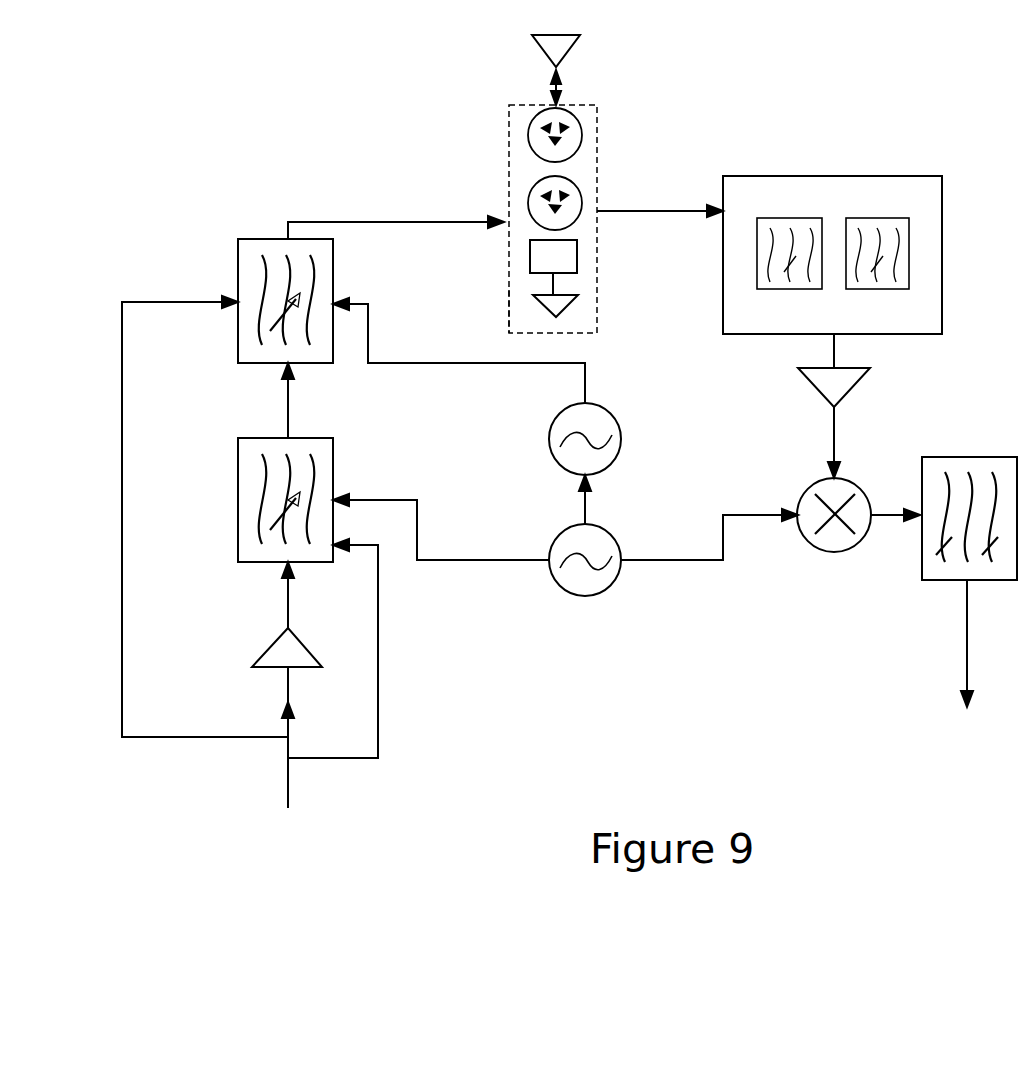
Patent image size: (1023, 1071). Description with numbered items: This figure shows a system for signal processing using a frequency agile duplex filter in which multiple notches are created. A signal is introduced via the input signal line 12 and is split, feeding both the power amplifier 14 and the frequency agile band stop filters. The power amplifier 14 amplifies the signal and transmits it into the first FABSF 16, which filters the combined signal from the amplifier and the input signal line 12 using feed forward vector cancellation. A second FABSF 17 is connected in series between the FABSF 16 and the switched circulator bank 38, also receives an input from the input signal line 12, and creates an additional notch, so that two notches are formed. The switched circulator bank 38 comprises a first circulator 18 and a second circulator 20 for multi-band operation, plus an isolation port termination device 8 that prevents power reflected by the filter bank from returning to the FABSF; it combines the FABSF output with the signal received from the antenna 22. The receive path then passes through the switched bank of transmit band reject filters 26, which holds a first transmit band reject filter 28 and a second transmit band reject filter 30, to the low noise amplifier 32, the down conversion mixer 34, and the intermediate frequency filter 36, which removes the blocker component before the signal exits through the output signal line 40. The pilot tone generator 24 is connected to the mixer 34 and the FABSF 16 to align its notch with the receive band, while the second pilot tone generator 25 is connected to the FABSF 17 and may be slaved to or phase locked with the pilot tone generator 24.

The isolation port termination device 8 is at (582, 278).
The input signal line 12 is at (285, 785).
The power amplifier 14 is at (252, 665).
The frequency agile band stop filter 16 is at (238, 520).
The frequency agile band stop filter 17 is at (238, 316).
The first circulator 18 is at (527, 203).
The second circulator 20 is at (530, 148).
The antenna 22 is at (538, 52).
The pilot tone generator 24 is at (572, 595).
The second pilot tone generator 25 is at (549, 450).
The switched bank of transmit band reject filters 26 is at (735, 335).
The first transmit band reject filter 28 is at (909, 248).
The second transmit band reject filter 30 is at (757, 255).
The low noise amplifier 32 is at (808, 390).
The down conversion mixer 34 is at (800, 505).
The intermediate frequency filter 36 is at (932, 580).
The switched circulator bank 38 is at (508, 305).
The output signal line 40 is at (967, 645).